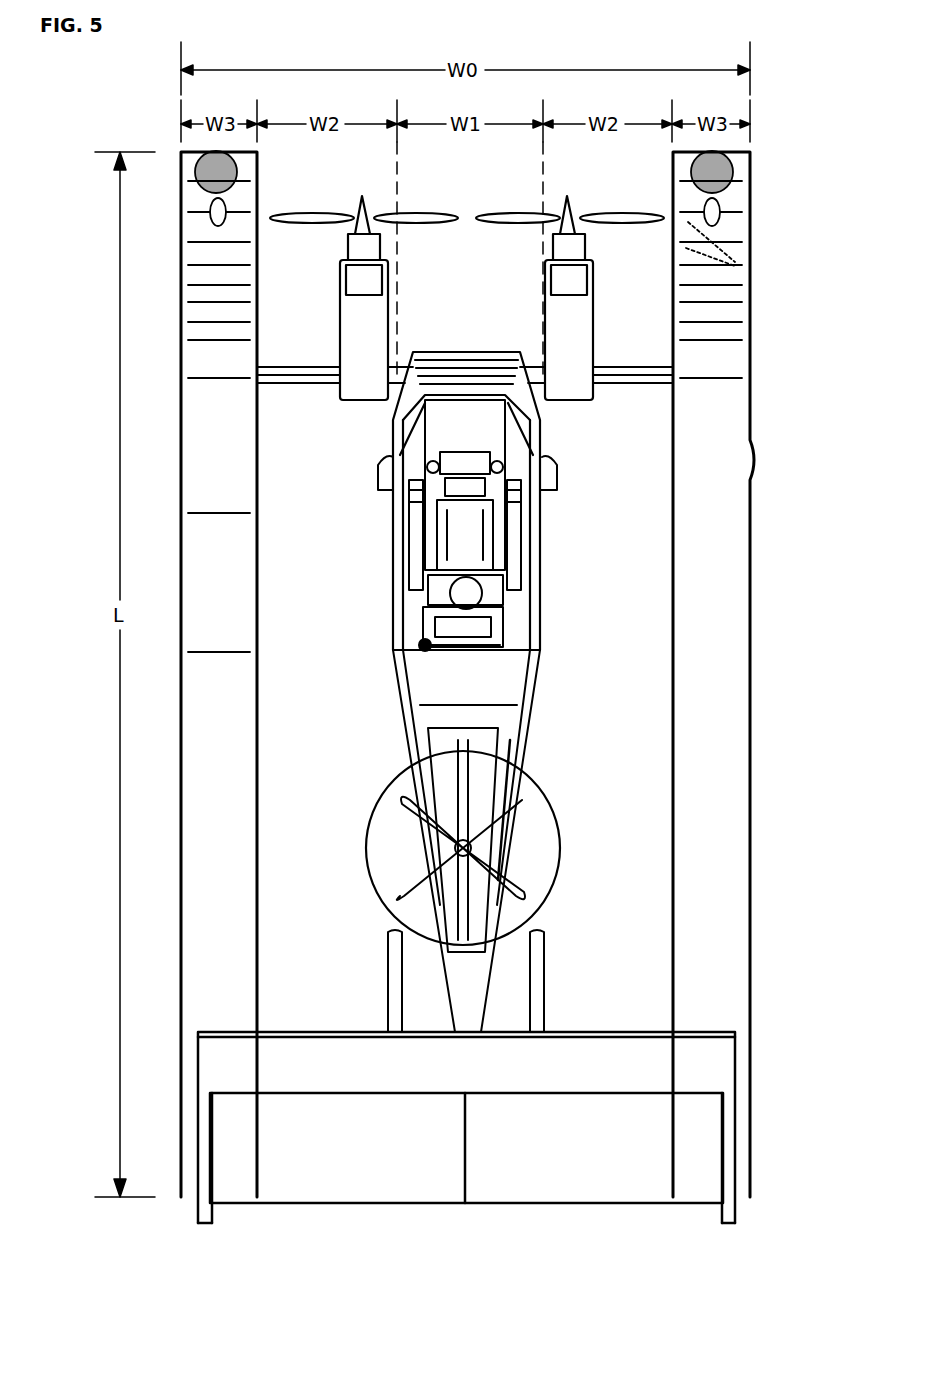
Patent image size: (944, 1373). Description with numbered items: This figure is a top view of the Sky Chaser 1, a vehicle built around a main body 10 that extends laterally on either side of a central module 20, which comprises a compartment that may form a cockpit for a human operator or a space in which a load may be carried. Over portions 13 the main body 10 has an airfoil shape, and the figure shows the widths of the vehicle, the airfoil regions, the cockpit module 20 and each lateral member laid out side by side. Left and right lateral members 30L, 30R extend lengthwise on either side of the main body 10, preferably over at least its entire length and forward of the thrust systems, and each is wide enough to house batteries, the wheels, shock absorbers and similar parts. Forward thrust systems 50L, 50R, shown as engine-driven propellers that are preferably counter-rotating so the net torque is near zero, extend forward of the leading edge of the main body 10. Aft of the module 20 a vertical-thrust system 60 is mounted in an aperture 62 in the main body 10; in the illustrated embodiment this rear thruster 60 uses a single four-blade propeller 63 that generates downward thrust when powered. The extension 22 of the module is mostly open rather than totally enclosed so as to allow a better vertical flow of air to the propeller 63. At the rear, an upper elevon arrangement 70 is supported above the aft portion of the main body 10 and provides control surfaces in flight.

The Sky Chaser 1 is at (800, 431).
The main body 10 is at (577, 659).
The airfoil portions 13 is at (333, 490).
The central module 20 is at (453, 365).
The cowling extension 22 is at (515, 748).
The left lateral member 30L is at (235, 452).
The right lateral member 30R is at (730, 452).
The left forward thrust system 50L is at (364, 210).
The right forward thrust system 50R is at (570, 210).
The vertical-thrust system 60 is at (499, 848).
The aperture 62 is at (385, 848).
The propeller 63 is at (415, 880).
The upper elevon arrangement 70 is at (340, 1168).